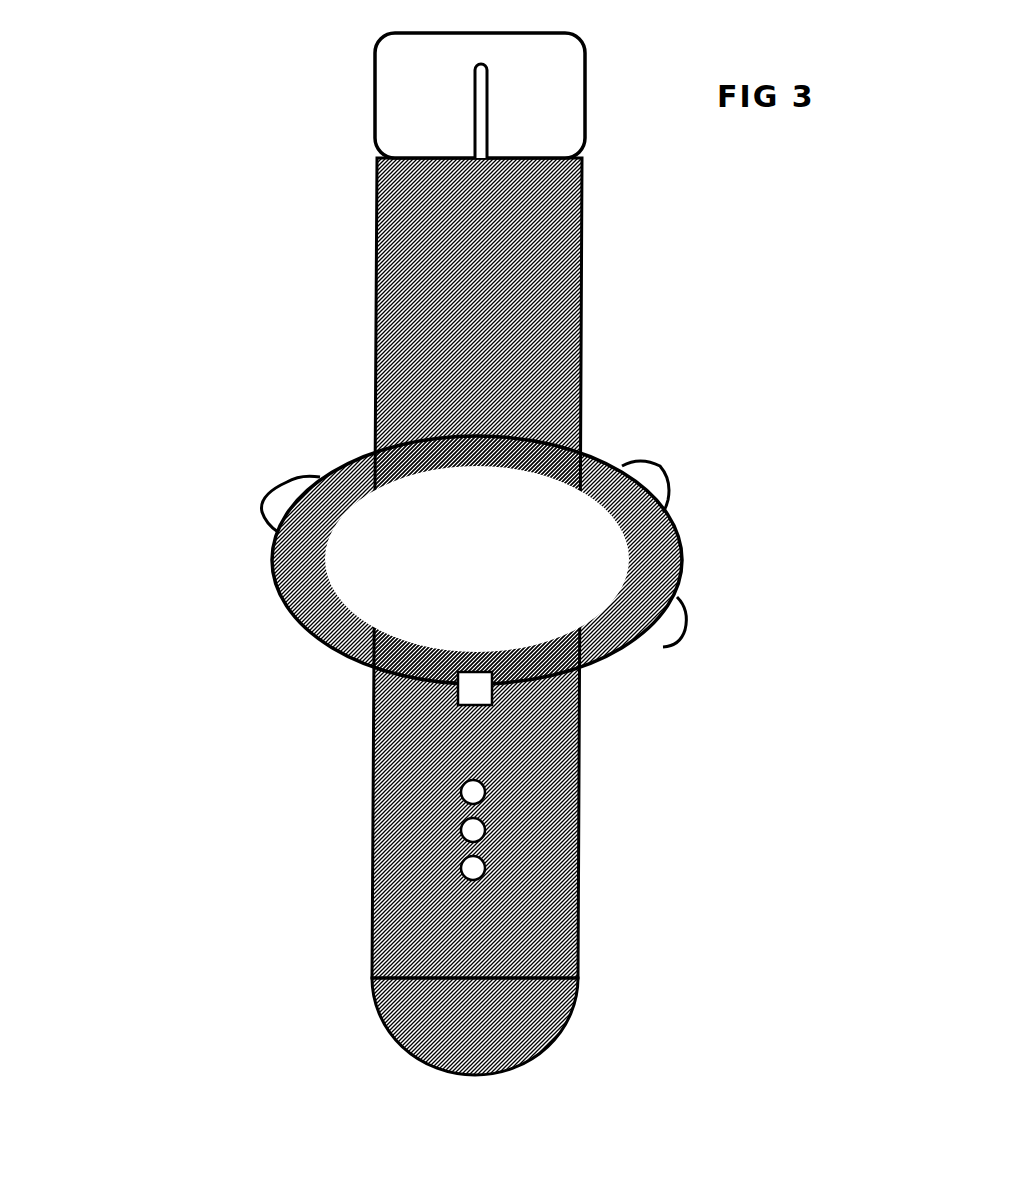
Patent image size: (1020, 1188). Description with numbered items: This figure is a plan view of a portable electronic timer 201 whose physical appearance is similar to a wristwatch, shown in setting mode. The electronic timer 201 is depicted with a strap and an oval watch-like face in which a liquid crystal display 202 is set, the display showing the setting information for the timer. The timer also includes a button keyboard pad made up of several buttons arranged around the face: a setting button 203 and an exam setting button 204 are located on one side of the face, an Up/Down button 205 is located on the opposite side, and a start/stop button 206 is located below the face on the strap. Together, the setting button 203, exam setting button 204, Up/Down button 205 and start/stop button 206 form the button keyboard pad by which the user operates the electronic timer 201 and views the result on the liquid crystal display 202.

The electronic timer 201 is at (480, 380).
The liquid crystal display 202 is at (303, 632).
The setting button 203 is at (655, 483).
The exam setting button 204 is at (672, 627).
The Up/Down button 205 is at (273, 512).
The start/stop button 206 is at (475, 688).